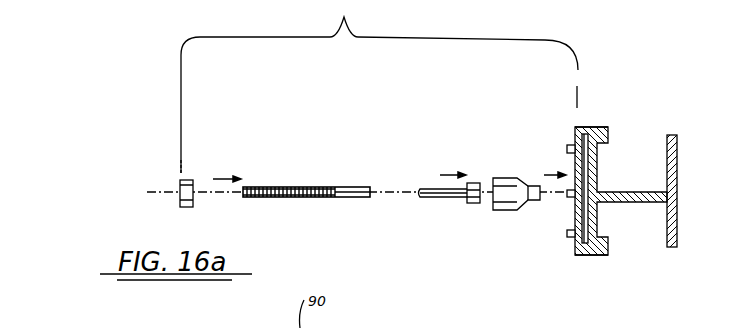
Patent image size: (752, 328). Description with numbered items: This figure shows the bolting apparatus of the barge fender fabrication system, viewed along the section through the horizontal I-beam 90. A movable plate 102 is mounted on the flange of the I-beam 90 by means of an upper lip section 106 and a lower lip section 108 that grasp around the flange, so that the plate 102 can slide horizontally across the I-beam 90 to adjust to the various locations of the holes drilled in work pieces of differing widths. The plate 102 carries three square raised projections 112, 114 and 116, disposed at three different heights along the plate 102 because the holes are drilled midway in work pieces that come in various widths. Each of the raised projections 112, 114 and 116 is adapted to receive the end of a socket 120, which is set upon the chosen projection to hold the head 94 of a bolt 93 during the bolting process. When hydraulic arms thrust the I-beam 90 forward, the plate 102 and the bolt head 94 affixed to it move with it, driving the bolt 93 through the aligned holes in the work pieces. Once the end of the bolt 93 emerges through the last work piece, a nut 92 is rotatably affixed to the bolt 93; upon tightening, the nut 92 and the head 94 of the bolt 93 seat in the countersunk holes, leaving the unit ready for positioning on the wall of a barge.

The horizontal I-beam 90 is at (597, 174).
The nut 92 is at (183, 180).
The bolt 93 is at (287, 187).
The head of bolt 94 is at (474, 183).
The movable plate 102 is at (573, 126).
The upper lip section 106 is at (590, 126).
The lower lip section 108 is at (593, 257).
The square raised projection 112 is at (567, 147).
The square raised projection 114 is at (568, 195).
The square raised projection 116 is at (568, 235).
The socket 120 is at (510, 178).